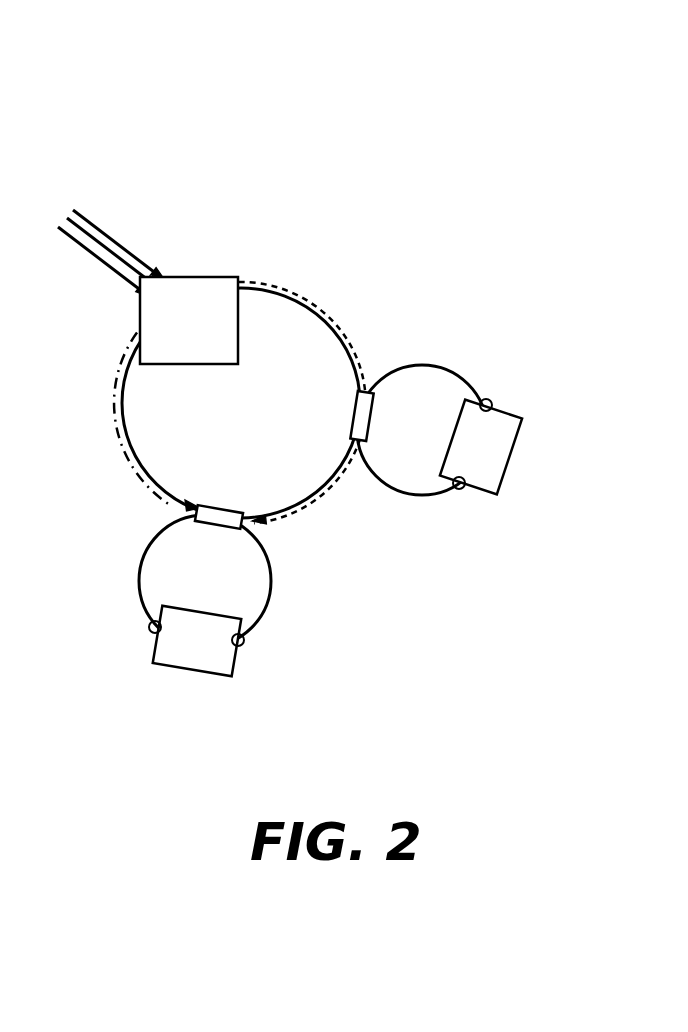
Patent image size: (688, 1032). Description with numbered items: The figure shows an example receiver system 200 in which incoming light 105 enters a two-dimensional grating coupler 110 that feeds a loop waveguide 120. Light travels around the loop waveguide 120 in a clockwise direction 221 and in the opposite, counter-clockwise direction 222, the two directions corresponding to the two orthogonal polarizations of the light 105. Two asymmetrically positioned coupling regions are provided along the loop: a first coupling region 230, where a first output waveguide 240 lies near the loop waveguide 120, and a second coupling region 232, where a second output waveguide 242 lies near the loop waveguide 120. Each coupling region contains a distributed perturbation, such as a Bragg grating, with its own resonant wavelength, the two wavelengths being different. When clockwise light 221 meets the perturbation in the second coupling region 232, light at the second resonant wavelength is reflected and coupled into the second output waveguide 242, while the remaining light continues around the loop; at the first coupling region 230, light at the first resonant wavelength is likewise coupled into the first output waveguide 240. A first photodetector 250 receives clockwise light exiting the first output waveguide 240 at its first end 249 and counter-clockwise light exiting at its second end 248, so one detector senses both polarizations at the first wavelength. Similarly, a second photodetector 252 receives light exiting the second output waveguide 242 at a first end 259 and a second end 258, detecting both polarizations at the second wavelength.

The receiver system 200 is at (180, 110).
The light 105 is at (97, 227).
The two-dimensional grating coupler 110 is at (215, 278).
The loop waveguide 120 is at (331, 301).
The clockwise direction 221 is at (348, 342).
The counter-clockwise propagating light path 222 is at (116, 436).
The first coupling region 230 is at (226, 508).
The second coupling region 232 is at (349, 401).
The first output waveguide 240 is at (270, 562).
The second output waveguide 242 is at (428, 364).
The second end 248 is at (149, 632).
The first end 249 is at (245, 640).
The first photodetector 250 is at (238, 663).
The second photodetector 252 is at (492, 406).
The second end 258 is at (458, 489).
The first end 259 is at (488, 399).